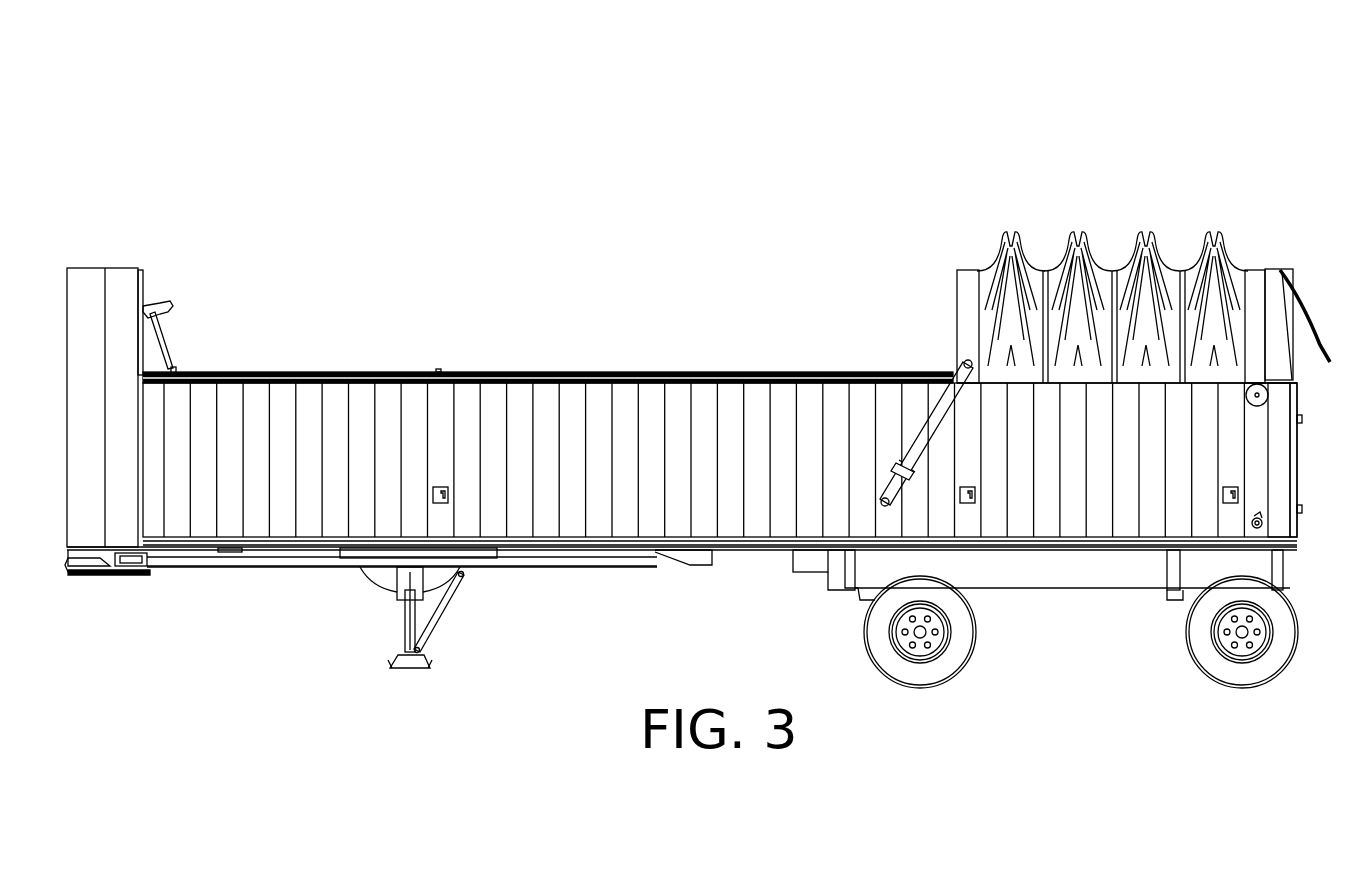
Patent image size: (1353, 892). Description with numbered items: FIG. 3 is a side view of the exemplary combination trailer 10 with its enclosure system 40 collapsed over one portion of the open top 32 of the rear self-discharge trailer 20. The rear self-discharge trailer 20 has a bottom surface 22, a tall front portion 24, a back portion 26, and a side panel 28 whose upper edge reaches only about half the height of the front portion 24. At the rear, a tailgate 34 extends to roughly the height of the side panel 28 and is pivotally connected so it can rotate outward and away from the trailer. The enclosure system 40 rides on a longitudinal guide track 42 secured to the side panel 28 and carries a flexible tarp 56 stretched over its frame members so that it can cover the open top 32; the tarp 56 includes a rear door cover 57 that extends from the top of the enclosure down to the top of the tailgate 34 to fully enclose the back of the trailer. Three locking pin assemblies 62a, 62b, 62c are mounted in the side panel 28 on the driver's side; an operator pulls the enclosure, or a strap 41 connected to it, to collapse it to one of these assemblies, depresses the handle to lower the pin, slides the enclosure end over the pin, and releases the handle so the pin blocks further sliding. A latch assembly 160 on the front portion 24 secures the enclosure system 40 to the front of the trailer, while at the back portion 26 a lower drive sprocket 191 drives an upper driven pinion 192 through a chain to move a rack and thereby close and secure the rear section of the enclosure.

The combination trailer 10 is at (1106, 152).
The rear self-discharge trailer 20 is at (283, 505).
The bottom surface 22 is at (600, 542).
The front portion 24 is at (87, 285).
The back portion 26 is at (1283, 520).
The side panel 28 is at (680, 505).
The open top 32 is at (541, 364).
The tailgate 34 is at (1300, 442).
The enclosure system 40 is at (1165, 257).
The strap 41 is at (895, 472).
The longitudinal guide track 42 is at (318, 372).
The flexible tarp 56 is at (1232, 263).
The rear door cover 57 is at (1300, 288).
The locking pin assembly 62a is at (445, 505).
The locking pin assembly 62b is at (967, 504).
The locking pin assembly 62c is at (1223, 495).
The latch assembly 160 is at (165, 306).
The lower drive sprocket 191 is at (1263, 526).
The upper driven pinion 192 is at (1262, 384).